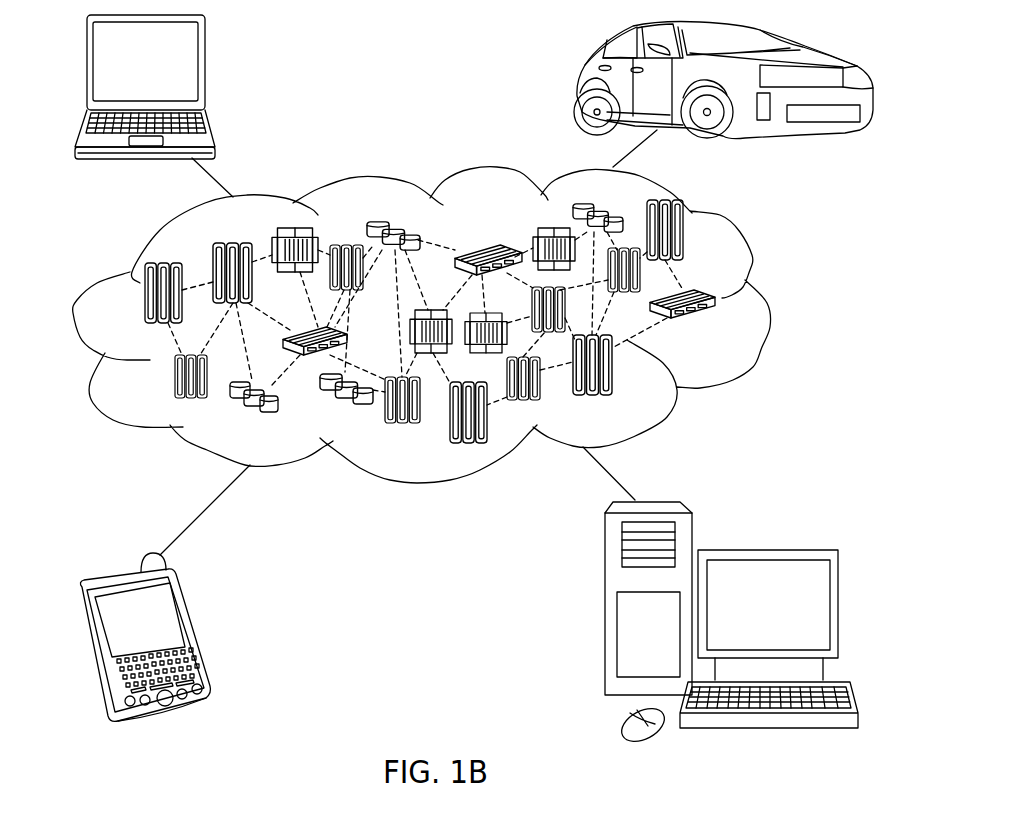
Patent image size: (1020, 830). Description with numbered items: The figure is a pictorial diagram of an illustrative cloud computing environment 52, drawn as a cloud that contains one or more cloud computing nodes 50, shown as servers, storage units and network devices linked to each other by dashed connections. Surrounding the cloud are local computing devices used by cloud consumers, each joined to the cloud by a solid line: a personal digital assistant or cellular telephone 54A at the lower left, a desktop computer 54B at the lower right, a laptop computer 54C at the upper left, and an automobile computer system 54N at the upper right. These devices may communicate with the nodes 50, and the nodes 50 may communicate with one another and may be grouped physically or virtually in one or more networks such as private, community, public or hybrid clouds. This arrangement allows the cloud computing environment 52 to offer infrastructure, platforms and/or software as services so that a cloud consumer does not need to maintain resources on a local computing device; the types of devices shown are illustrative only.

The cloud computing nodes 50 is at (772, 222).
The cloud computing environment 52 is at (767, 302).
The personal digital assistant or cellular telephone 54A is at (197, 631).
The desktop computer 54B is at (766, 550).
The laptop computer 54C is at (205, 68).
The automobile computer system 54N is at (578, 80).